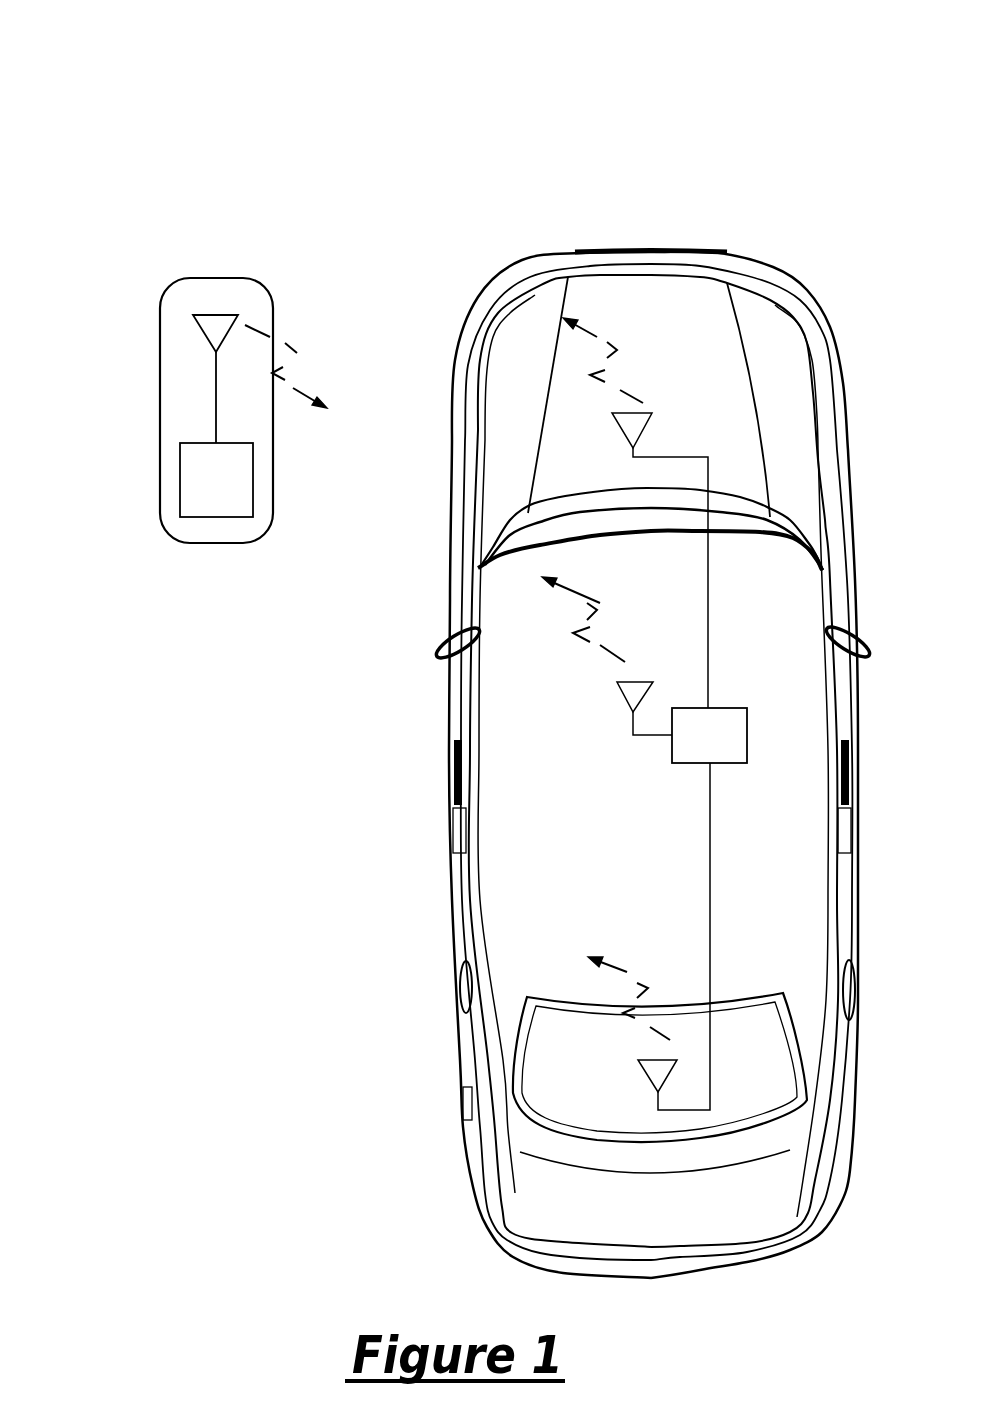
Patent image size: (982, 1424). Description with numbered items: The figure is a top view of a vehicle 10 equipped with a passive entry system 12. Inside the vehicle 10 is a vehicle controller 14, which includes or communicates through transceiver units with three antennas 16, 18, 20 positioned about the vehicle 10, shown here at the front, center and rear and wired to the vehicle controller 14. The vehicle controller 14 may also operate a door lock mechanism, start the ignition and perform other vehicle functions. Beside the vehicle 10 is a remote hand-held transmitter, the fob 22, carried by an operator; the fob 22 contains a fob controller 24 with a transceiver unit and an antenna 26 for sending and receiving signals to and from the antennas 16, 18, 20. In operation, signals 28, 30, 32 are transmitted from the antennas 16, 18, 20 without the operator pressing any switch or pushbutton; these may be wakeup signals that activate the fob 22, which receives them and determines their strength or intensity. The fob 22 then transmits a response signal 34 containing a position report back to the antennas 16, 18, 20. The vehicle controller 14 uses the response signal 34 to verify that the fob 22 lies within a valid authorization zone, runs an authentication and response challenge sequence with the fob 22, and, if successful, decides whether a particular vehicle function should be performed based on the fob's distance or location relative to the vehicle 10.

The vehicle 10 is at (692, 238).
The passive entry system 12 is at (417, 93).
The vehicle controller 14 is at (748, 733).
The antenna 16 is at (617, 413).
The antenna 18 is at (617, 682).
The antenna 20 is at (638, 1060).
The fob 22 is at (217, 277).
The fob controller 24 is at (182, 517).
The antenna 26 is at (193, 315).
The signal 28 is at (610, 338).
The signal 30 is at (617, 623).
The signal 32 is at (610, 945).
The response signal 34 is at (293, 350).